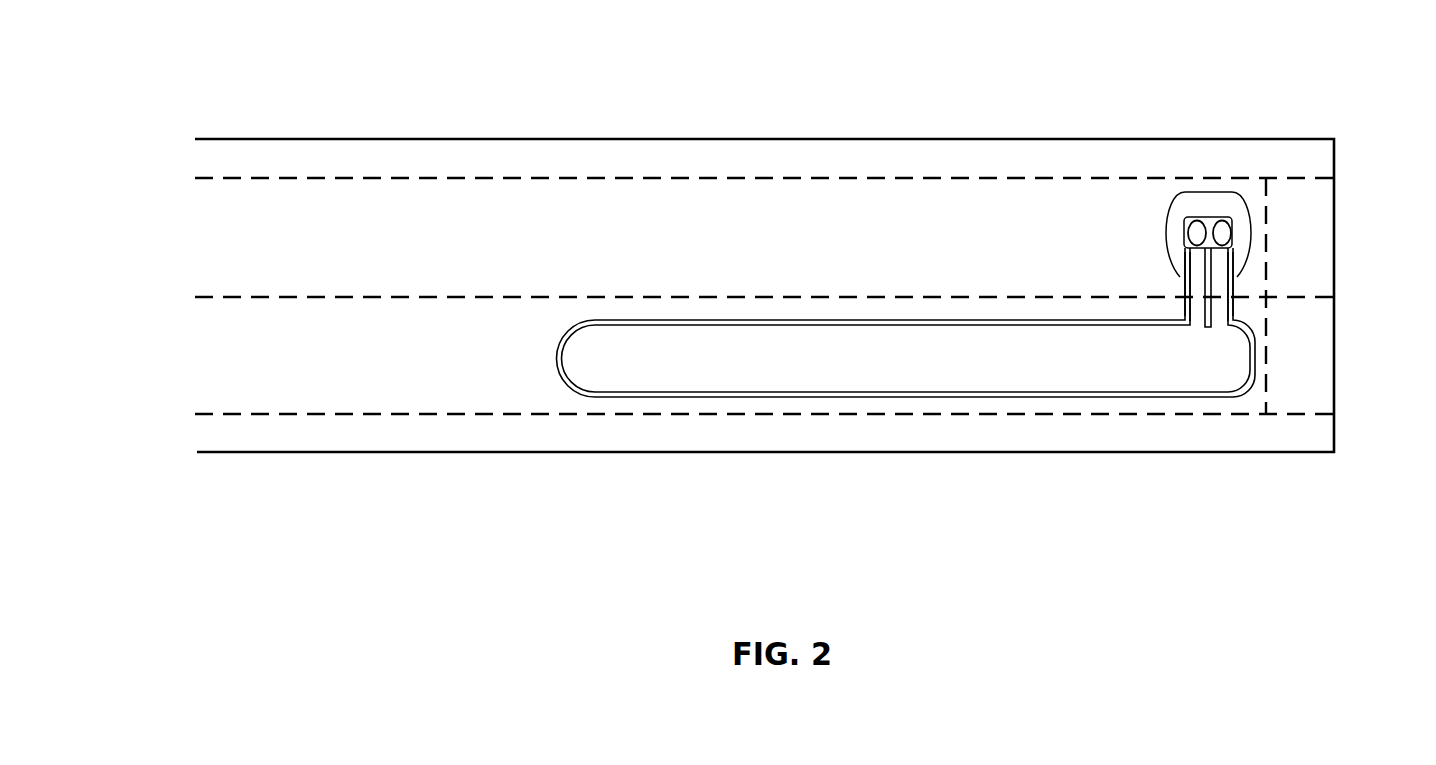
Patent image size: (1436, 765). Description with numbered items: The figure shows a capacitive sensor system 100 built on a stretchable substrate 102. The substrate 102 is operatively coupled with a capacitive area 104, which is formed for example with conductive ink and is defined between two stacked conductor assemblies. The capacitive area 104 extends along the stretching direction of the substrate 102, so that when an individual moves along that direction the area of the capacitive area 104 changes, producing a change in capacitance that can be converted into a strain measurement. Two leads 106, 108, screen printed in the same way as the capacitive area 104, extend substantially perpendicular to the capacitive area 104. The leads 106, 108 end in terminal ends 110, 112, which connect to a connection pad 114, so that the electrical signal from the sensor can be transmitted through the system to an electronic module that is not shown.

The capacitive sensor system 100 is at (168, 239).
The stretchable substrate 102 is at (275, 257).
The capacitive area 104 is at (663, 357).
The lead 106 is at (1190, 288).
The lead 108 is at (1226, 290).
The terminal end 110 is at (1195, 232).
The terminal end 112 is at (1230, 226).
The connection pad 114 is at (1215, 198).